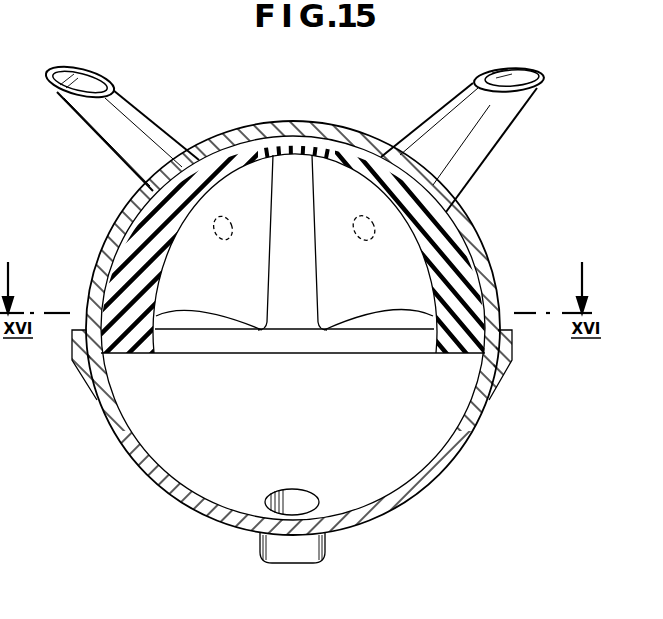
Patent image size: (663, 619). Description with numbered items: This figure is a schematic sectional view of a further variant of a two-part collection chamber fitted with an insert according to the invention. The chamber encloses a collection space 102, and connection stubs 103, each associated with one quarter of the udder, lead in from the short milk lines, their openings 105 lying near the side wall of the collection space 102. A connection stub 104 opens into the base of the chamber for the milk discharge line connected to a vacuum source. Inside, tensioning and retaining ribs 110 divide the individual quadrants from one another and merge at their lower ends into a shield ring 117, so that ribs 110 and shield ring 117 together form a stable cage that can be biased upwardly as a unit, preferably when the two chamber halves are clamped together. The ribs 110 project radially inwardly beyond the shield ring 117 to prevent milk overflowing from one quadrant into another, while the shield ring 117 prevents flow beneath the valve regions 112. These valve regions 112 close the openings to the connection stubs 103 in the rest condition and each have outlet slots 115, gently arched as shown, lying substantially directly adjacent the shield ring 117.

The collection space 102 is at (407, 458).
The connection stubs 103 is at (108, 122).
The connection stub 104 is at (262, 550).
The openings 105 is at (222, 240).
The tensioning and retaining ribs 110 is at (157, 264).
The valve regions 112 is at (249, 178).
The outlet slots 115 is at (193, 320).
The shield ring 117 is at (310, 343).